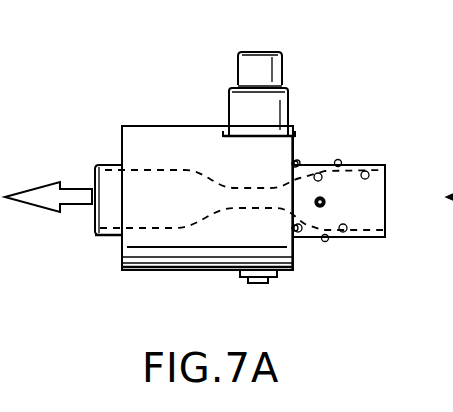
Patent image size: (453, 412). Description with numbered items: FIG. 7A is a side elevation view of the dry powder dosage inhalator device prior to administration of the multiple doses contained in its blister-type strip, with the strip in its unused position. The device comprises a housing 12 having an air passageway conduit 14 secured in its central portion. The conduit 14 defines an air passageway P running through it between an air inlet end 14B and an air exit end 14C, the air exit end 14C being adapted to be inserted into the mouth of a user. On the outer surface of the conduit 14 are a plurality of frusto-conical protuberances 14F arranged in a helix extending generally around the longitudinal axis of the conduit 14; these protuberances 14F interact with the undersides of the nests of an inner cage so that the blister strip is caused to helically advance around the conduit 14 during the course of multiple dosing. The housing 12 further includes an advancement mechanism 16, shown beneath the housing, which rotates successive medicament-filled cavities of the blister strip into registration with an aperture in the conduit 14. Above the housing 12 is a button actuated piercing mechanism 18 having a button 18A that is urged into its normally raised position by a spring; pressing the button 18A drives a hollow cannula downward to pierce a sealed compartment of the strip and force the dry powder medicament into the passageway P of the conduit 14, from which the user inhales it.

The housing 12 is at (154, 48).
The air passageway conduit 14 is at (364, 278).
The air inlet end 14B is at (386, 226).
The air exit end 14C is at (105, 163).
The frusto-conical protuberances 14F is at (364, 171).
The advancement mechanism 16 is at (283, 300).
The button actuated piercing mechanism 18 is at (326, 81).
The button 18A is at (277, 52).
The air passageway P is at (143, 173).